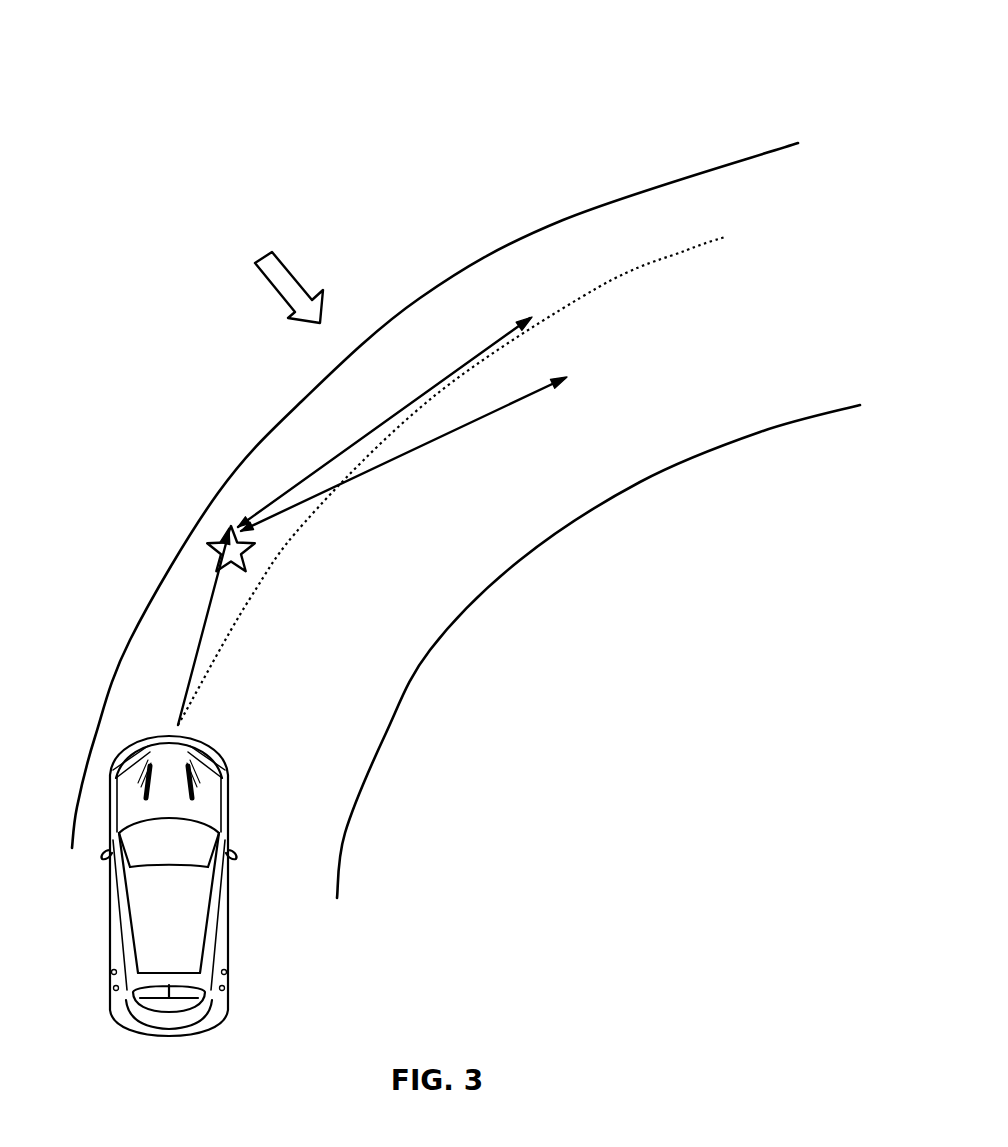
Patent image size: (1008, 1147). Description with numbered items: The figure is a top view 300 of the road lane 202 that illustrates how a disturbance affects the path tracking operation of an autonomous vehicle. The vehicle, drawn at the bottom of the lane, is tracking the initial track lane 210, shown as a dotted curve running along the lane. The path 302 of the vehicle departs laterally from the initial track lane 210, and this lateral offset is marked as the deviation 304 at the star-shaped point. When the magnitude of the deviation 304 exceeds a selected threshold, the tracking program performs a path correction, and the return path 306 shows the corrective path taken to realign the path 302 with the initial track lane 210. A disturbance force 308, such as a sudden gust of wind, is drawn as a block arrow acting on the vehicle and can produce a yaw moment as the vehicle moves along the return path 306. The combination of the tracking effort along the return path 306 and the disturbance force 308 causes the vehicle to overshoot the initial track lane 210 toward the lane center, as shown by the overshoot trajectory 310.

The top view 300 is at (633, 55).
The road lane 202 is at (670, 438).
The initial track lane 210 is at (237, 622).
The path 302 is at (197, 650).
The deviation 304 is at (273, 567).
The return path 306 is at (492, 343).
The disturbance force 308 is at (275, 272).
The overshoot trajectory 310 is at (476, 420).